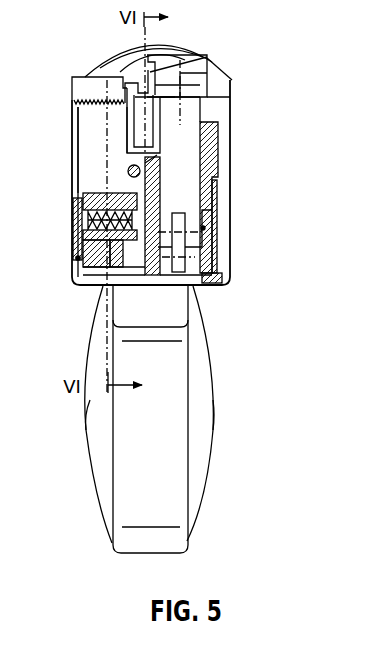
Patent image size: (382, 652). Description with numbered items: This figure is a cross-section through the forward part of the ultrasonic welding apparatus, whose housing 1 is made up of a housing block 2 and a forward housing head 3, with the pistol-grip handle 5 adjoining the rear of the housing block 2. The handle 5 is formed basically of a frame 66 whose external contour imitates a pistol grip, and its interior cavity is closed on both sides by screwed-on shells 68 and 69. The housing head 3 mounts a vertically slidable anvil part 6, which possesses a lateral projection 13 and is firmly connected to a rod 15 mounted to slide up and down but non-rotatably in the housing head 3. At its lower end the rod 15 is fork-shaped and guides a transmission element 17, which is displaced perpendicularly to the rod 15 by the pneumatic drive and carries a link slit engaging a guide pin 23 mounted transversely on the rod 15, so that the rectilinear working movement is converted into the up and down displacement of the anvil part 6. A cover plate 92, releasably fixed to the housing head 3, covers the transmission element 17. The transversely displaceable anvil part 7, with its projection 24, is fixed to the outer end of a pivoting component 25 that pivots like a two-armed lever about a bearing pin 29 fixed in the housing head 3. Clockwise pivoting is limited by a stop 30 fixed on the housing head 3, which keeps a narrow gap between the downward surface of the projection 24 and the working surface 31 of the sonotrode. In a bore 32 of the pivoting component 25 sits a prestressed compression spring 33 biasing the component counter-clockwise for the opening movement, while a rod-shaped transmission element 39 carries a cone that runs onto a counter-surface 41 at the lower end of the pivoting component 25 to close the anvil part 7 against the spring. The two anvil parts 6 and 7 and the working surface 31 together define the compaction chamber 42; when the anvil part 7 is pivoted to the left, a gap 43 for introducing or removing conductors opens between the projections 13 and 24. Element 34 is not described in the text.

The housing 1 is at (237, 78).
The housing block 2 is at (233, 103).
The housing head 3 is at (210, 140).
The handle 5 is at (219, 420).
The anvil part 6 is at (205, 52).
The anvil part 7 is at (70, 99).
The lateral projection 13 is at (158, 58).
The rod 15 is at (187, 185).
The transmission element 17 is at (178, 218).
The guide pin 23 is at (205, 229).
The projection 24 is at (143, 90).
The pivoting component 25 is at (111, 160).
The bearing pin 29 is at (129, 174).
The stop 30 is at (78, 258).
The working surface 31 is at (193, 85).
The bore 32 is at (90, 226).
The compression spring 33 is at (88, 194).
The strip 34 is at (75, 207).
The transmission element 39 is at (105, 270).
The counter-surface 41 is at (120, 262).
The compaction chamber 42 is at (209, 60).
The gap 43 is at (147, 72).
The frame 66 is at (144, 441).
The shell 68 is at (92, 462).
The shell 69 is at (206, 476).
The cover plate 92 is at (213, 265).